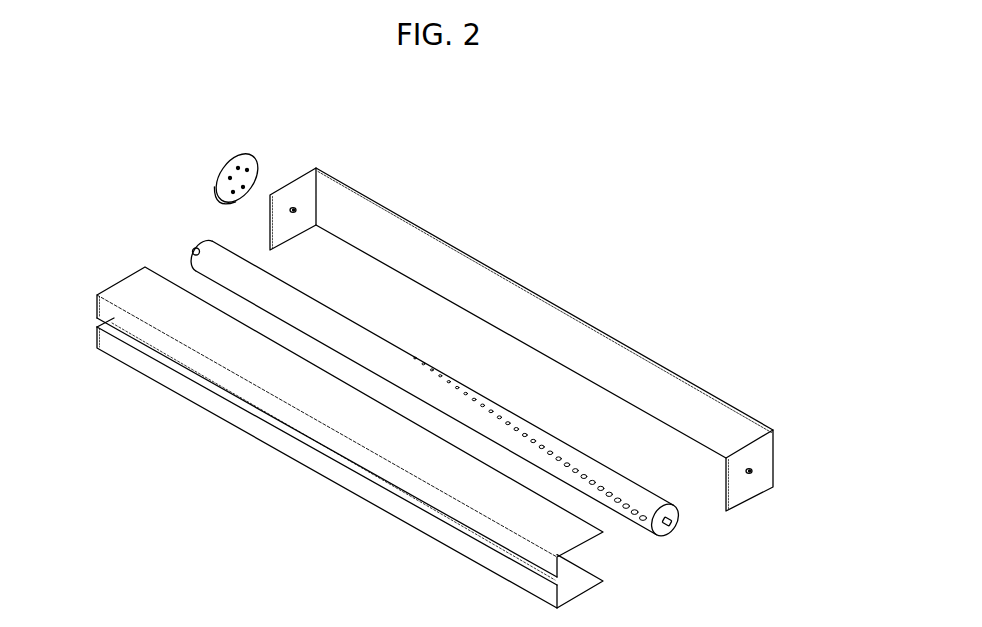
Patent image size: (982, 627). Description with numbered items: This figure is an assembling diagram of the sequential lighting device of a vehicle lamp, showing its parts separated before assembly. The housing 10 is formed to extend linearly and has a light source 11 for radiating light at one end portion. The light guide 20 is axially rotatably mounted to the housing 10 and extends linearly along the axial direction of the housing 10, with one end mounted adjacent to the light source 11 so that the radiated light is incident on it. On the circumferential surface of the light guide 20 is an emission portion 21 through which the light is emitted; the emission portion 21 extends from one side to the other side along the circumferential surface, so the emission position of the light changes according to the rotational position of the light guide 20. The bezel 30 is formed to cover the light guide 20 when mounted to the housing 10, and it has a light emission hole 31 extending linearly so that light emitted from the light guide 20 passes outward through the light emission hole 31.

The housing 10 is at (565, 294).
The light source 11 is at (224, 163).
The light guide 20 is at (681, 533).
The emission portion 21 is at (645, 529).
The bezel 30 is at (366, 510).
The light emission hole 31 is at (268, 424).